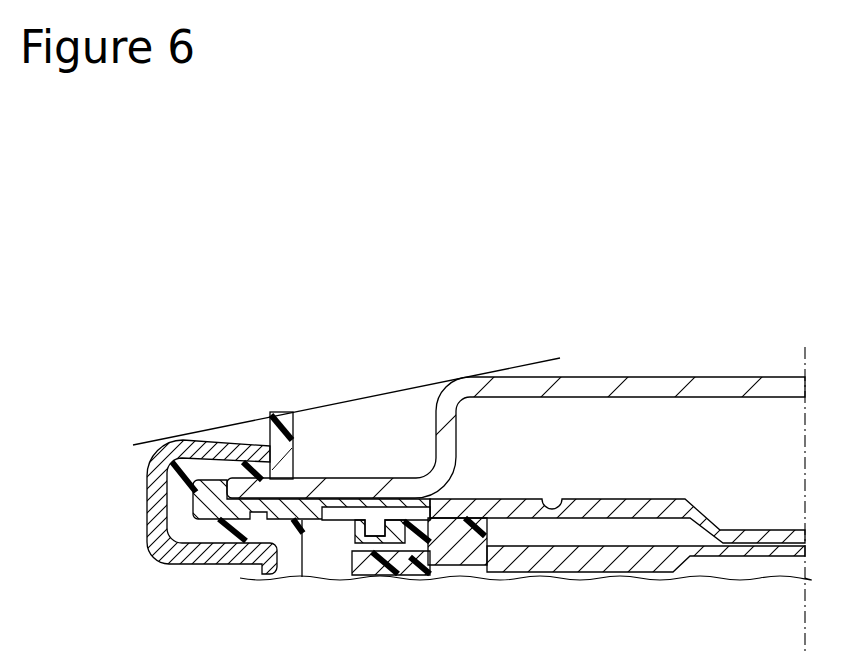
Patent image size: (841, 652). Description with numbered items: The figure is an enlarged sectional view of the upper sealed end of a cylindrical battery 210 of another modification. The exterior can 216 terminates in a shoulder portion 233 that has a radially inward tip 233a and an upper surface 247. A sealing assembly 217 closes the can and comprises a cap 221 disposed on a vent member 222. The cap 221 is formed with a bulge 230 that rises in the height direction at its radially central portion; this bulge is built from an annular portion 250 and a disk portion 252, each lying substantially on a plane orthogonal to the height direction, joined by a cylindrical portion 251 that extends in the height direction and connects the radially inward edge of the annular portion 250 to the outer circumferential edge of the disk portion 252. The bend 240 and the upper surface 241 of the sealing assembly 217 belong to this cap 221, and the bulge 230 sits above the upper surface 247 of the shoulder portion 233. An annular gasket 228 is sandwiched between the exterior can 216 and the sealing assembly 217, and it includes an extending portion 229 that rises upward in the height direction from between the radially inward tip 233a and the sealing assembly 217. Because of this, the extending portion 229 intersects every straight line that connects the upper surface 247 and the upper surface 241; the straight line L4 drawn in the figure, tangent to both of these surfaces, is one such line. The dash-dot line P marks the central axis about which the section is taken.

The cylindrical battery 210 is at (587, 363).
The exterior can 216 is at (150, 494).
The sealing assembly 217 is at (690, 365).
The cap 221 is at (762, 397).
The vent member 222 is at (686, 499).
The annular gasket 228 is at (183, 508).
The extending portion 229 is at (297, 427).
The bulge 230 is at (618, 377).
The shoulder portion 233 is at (194, 439).
The radially inward tip 233a is at (280, 422).
The bent portion 240 is at (470, 377).
The upper surface 241 is at (653, 377).
The upper surface 247 is at (233, 441).
The annular portion 250 is at (333, 478).
The cylindrical portion 251 is at (443, 440).
The disk portion 252 is at (735, 377).
The straight line L4 is at (380, 395).
The center line P is at (802, 485).